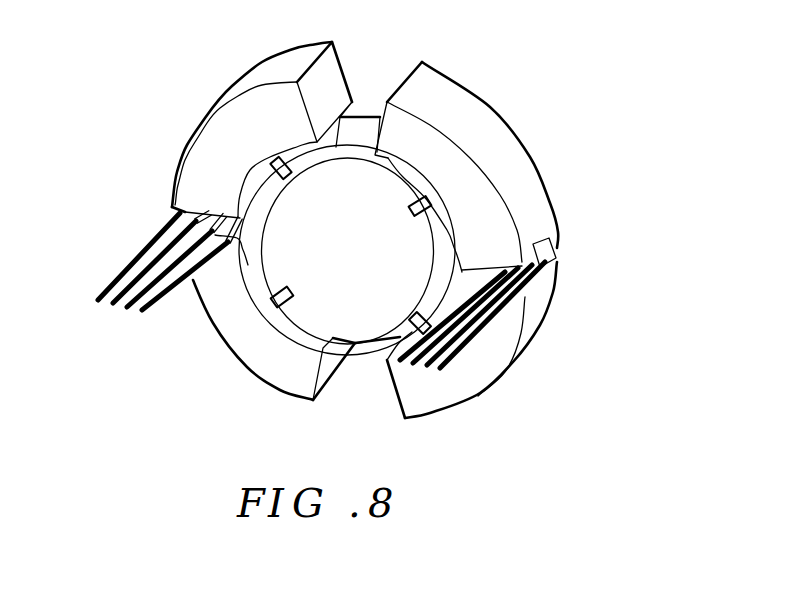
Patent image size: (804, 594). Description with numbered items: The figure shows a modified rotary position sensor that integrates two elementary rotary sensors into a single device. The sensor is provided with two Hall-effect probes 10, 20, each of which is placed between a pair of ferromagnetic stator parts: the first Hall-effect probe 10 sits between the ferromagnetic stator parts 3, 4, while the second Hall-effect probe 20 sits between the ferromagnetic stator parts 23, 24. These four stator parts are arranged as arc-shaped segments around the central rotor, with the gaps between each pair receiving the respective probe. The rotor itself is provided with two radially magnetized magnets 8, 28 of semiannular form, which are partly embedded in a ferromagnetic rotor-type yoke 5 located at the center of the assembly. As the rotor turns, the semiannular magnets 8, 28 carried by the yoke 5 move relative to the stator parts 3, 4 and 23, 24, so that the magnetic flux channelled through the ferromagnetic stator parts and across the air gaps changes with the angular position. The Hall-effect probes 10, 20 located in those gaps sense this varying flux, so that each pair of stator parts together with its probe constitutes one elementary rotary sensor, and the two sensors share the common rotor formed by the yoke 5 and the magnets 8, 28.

The ferromagnetic stator part 3 is at (453, 88).
The ferromagnetic stator part 4 is at (488, 363).
The ferromagnetic rotor-type yoke 5 is at (347, 167).
The radially magnetized magnet 8 is at (432, 207).
The Hall-effect probe 10 is at (550, 253).
The Hall-effect probe 20 is at (122, 270).
The ferromagnetic stator part 23 is at (240, 106).
The ferromagnetic stator part 24 is at (263, 348).
The radially magnetized magnet 28 is at (259, 191).